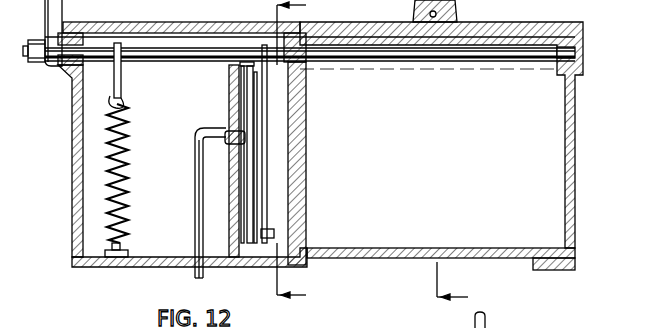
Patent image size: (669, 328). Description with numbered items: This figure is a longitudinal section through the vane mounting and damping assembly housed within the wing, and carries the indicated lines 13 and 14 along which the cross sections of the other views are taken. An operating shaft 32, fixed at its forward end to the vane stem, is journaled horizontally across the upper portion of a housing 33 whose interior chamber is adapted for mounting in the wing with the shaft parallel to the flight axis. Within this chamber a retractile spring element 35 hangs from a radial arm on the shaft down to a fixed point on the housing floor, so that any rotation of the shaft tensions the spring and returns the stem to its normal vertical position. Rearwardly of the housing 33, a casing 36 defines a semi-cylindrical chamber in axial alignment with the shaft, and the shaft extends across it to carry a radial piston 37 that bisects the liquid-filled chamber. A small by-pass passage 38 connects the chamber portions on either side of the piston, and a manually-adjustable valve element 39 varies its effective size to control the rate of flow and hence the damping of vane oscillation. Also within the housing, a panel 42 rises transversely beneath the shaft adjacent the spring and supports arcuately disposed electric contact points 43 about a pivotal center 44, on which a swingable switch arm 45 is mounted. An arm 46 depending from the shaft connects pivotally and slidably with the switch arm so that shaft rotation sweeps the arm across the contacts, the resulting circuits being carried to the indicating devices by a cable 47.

The section line 13- 13 is at (463, 283).
The section line 14- 14 is at (301, 152).
The operating shaft 32 is at (153, 58).
The housing 33 is at (78, 153).
The retractile spring element 35 is at (130, 168).
The casing or housing 36 is at (574, 143).
The radial piston 37 is at (441, 196).
The by-pass conduit or passage 38 is at (437, 13).
The manually-adjustable valve element 39 is at (122, 95).
The panel 42 is at (229, 107).
The electric contact points 43 is at (240, 64).
The pivotal center 44 is at (226, 143).
The swingable switch arm or contact member 45 is at (250, 91).
The arm 46 is at (266, 96).
The cable 47 is at (196, 201).